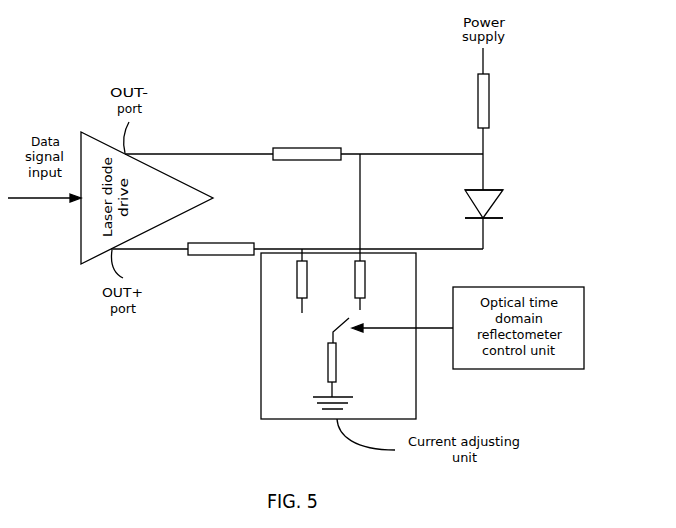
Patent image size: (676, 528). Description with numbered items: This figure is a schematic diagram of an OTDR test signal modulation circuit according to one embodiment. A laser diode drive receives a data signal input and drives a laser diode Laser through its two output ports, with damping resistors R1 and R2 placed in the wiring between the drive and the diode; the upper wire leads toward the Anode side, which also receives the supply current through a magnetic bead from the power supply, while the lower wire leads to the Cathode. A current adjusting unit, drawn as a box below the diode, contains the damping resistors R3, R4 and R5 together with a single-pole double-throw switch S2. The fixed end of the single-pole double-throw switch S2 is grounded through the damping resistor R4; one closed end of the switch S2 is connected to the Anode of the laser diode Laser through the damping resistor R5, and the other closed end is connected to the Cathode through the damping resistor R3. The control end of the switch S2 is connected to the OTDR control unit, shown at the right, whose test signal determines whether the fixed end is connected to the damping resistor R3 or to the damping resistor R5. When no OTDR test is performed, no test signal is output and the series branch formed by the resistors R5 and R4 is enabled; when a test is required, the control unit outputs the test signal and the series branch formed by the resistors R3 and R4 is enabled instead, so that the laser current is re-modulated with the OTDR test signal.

The damping resistor R1 is at (221, 239).
The damping resistor R2 is at (307, 143).
The damping resistor R3 is at (289, 281).
The damping resistor R4 is at (355, 370).
The damping resistor R5 is at (374, 285).
The single-pole double-throw switch S2 is at (323, 333).
The laser diode Laser is at (509, 204).
The anode of the laser diode Anode is at (490, 186).
The cathode of the laser diode Cathode is at (490, 222).